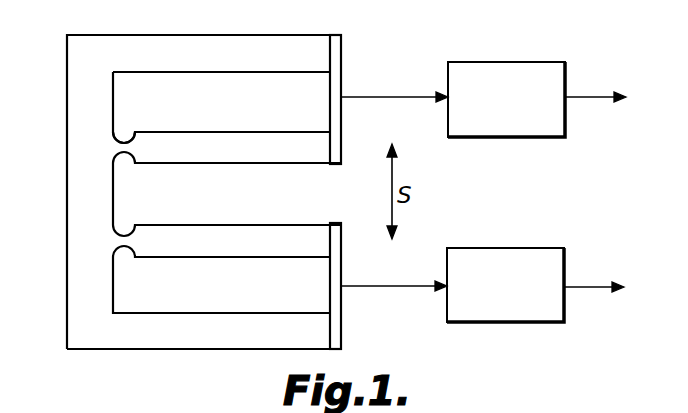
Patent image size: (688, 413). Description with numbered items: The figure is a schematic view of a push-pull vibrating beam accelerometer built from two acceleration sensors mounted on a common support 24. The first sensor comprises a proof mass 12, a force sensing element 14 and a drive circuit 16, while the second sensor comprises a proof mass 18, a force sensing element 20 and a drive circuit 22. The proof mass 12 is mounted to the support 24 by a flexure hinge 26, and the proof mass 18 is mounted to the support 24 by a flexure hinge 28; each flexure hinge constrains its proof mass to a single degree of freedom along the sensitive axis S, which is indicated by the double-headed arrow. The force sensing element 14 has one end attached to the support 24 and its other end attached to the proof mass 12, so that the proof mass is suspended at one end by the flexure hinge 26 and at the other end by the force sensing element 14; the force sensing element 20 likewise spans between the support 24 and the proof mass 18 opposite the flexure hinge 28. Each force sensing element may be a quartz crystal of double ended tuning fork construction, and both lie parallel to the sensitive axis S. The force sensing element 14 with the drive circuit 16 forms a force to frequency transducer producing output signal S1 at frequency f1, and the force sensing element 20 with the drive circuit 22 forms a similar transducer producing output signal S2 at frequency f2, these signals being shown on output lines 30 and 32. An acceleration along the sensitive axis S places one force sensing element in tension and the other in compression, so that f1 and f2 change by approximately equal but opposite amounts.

The proof mass 12 is at (248, 143).
The force sensing element 14 is at (341, 72).
The drive circuit 16 is at (495, 62).
The proof mass 18 is at (265, 247).
The force sensing element 20 is at (341, 318).
The drive circuit 22 is at (498, 322).
The support 24 is at (80, 107).
The flexure hinge 26 is at (123, 139).
The flexure hinge 28 is at (120, 234).
The force sensing element 30 is at (580, 98).
The second output line 32 is at (590, 288).